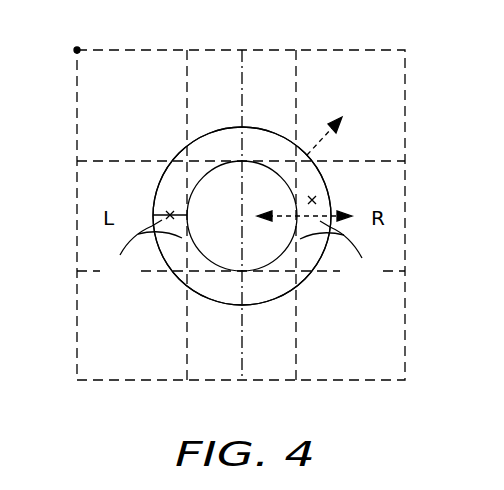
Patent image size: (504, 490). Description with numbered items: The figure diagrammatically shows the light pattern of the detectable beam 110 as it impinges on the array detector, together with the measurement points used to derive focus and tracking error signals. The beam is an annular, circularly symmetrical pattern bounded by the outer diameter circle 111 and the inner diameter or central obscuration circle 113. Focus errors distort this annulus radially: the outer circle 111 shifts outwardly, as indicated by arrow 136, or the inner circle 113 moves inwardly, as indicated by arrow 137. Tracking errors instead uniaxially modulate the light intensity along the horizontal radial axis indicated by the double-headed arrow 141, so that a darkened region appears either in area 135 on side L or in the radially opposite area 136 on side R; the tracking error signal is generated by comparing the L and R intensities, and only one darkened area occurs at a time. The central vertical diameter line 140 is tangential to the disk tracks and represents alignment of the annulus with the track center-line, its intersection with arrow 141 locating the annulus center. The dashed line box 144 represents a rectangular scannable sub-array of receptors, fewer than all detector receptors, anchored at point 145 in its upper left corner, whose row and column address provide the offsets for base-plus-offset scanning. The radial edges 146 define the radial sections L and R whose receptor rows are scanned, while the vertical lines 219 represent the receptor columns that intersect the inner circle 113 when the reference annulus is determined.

The detectable beam 110 is at (229, 110).
The outer diameter circle 111 is at (182, 150).
The inner diameter circle 113 is at (296, 271).
The area 135 is at (169, 209).
The area 136 is at (326, 122).
The arrow 137 is at (266, 190).
The central vertical diameter line 140 is at (247, 68).
The double-headed arrow 141 is at (324, 213).
The dashed line box 144 is at (405, 318).
The point 145 is at (76, 49).
The radial edges 146 is at (240, 254).
The vertical lines 219 is at (295, 357).